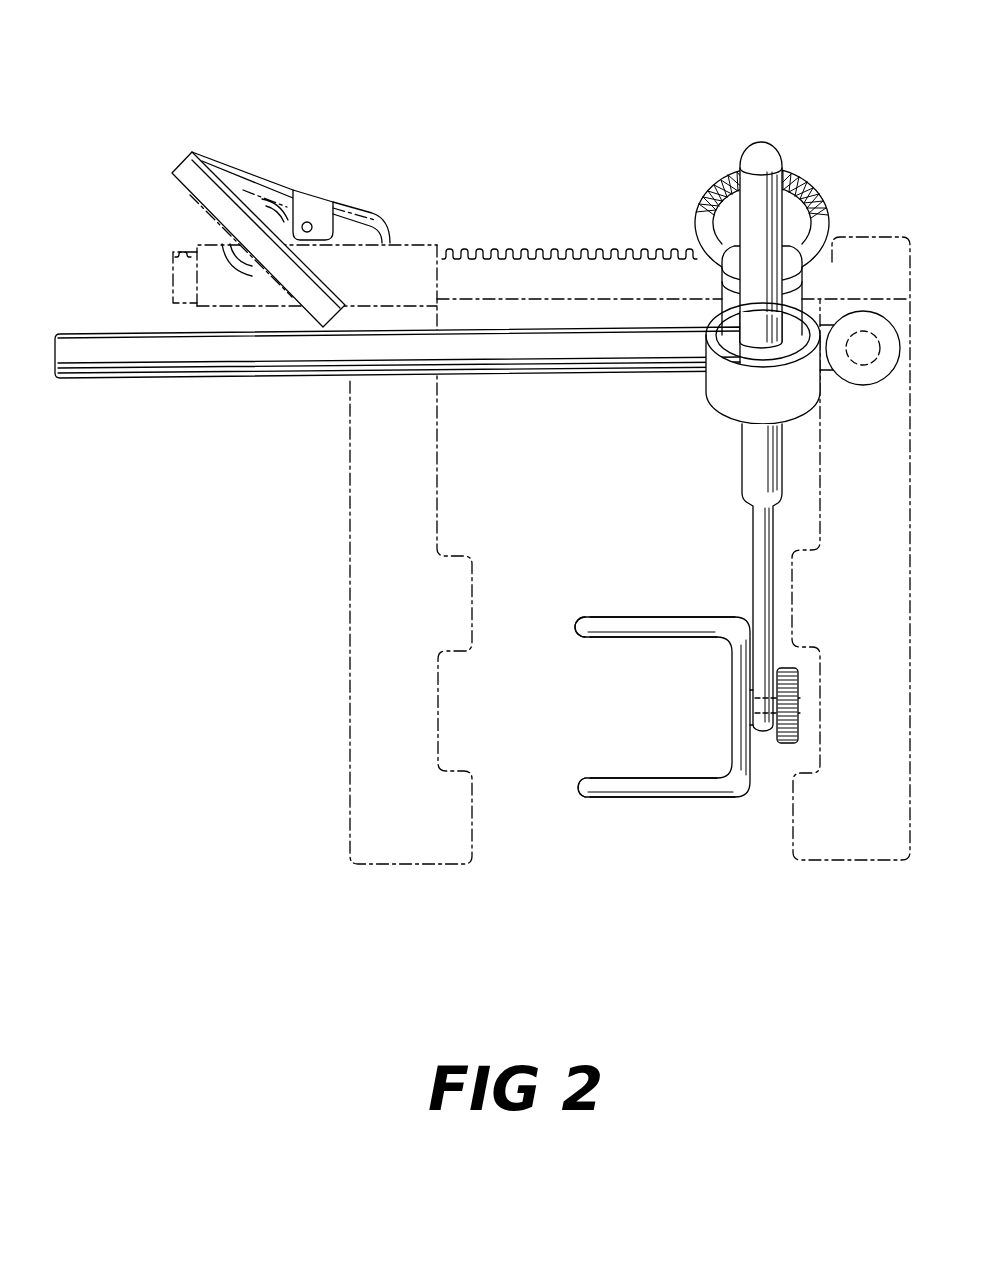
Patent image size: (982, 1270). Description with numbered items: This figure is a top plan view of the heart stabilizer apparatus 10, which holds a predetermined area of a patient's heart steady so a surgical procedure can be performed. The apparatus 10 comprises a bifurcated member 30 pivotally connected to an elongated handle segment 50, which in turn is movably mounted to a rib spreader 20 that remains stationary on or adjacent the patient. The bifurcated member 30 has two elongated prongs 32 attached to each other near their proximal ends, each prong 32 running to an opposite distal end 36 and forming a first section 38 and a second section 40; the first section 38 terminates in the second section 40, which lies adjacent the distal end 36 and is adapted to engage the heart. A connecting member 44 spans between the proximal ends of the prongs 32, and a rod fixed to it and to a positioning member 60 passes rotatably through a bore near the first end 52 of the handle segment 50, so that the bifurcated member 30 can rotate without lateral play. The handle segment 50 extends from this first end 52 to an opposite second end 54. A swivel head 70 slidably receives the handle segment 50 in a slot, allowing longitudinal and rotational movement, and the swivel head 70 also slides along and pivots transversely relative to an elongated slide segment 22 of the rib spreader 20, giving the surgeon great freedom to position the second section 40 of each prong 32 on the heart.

The apparatus 10 is at (463, 86).
The rib spreader 20 is at (413, 241).
The elongated slide segment 22 is at (210, 372).
The bifurcated member 30 is at (708, 798).
The elongated prongs 32 is at (655, 617).
The distal end 36 is at (573, 626).
The first section 38 is at (731, 660).
The second section 40 is at (653, 640).
The connecting member 44 is at (740, 734).
The elongated handle segment 50 is at (757, 144).
The first end 52 is at (765, 732).
The second end 54 is at (773, 146).
The positioning member 60 is at (797, 715).
The swivel head 70 is at (704, 191).